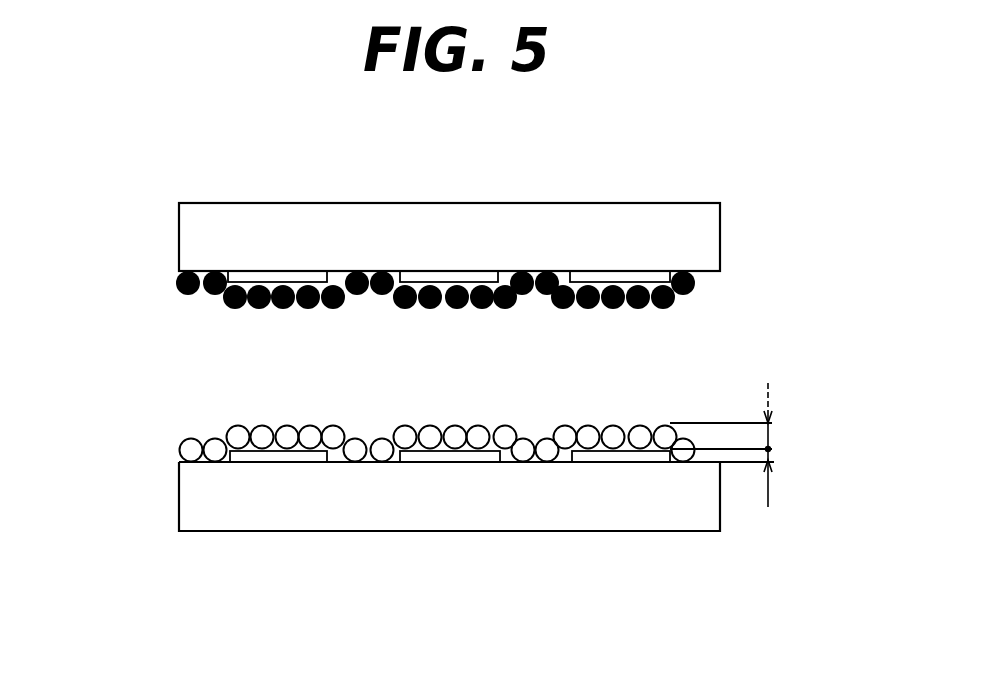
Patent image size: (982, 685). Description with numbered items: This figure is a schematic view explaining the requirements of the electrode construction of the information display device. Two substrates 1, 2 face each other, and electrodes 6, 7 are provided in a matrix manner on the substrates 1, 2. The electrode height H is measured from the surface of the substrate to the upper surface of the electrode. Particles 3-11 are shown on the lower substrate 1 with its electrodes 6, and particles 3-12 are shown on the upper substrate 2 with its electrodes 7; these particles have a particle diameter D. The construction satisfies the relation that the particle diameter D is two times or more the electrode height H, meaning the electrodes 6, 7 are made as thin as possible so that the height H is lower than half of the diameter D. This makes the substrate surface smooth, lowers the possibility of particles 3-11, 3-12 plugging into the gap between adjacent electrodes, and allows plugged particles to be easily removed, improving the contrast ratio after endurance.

The substrate 1 is at (178, 493).
The substrate 2 is at (178, 238).
The particles 3-11 is at (258, 428).
The particles 3-12 is at (187, 306).
The electrode 6 is at (287, 458).
The electrode 7 is at (285, 278).
The particle diameter D is at (772, 432).
The electrode height H is at (772, 458).